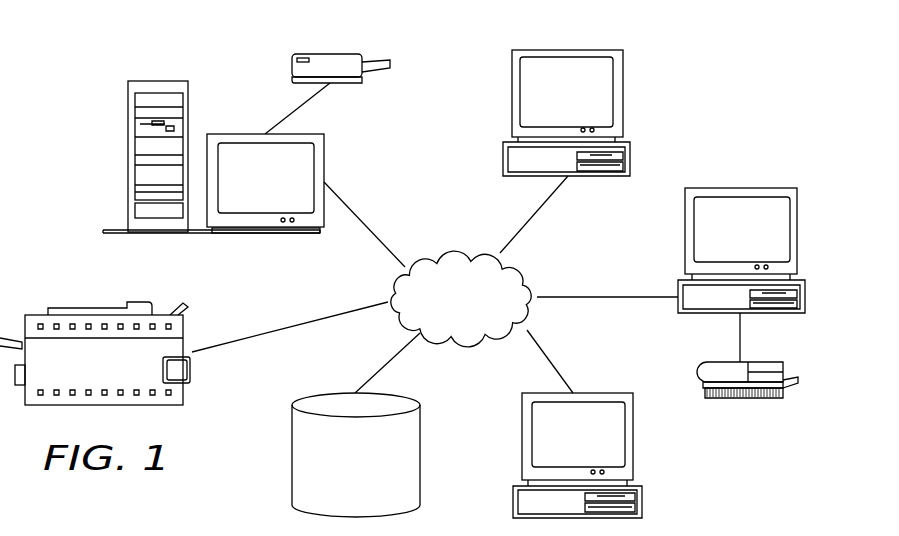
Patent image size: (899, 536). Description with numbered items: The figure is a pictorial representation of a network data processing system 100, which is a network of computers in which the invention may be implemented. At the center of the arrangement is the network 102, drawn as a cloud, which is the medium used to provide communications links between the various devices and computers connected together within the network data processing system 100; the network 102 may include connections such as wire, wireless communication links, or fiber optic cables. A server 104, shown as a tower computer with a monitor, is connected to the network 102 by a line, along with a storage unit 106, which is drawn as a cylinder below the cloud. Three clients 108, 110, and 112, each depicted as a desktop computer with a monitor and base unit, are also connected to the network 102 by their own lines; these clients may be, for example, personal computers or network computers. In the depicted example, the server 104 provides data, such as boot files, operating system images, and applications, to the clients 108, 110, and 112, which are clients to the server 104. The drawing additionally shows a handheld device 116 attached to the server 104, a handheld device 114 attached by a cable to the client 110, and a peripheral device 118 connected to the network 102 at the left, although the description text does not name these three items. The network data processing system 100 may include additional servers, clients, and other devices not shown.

The network data processing system 100 is at (730, 98).
The network 102 is at (441, 311).
The server 104 is at (245, 187).
The storage unit 106 is at (336, 475).
The client 108 is at (547, 103).
The client 110 is at (721, 243).
The client 112 is at (556, 448).
The handheld scanner device 114 is at (744, 398).
The handheld scanner device 116 is at (292, 65).
The network device / router 118 is at (77, 375).